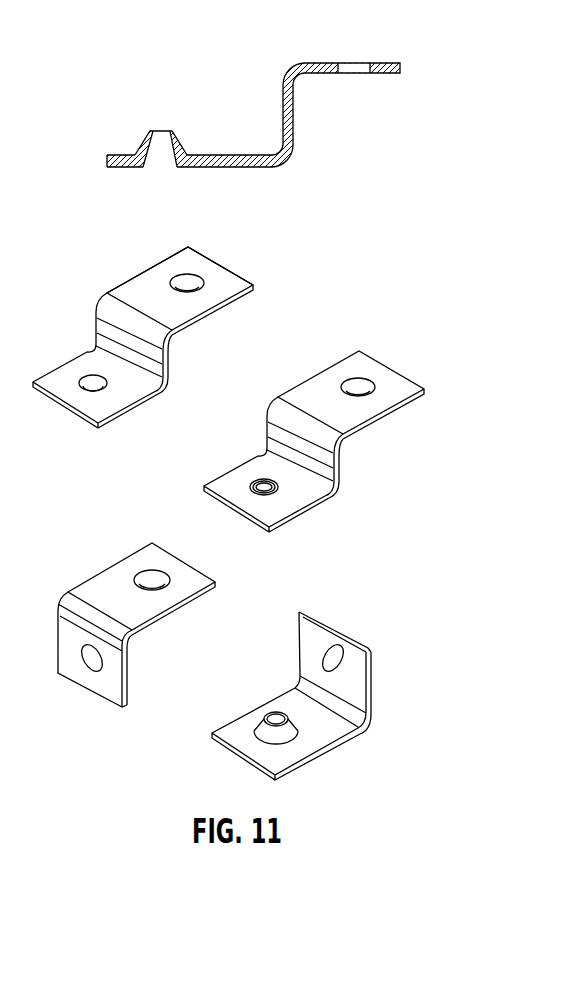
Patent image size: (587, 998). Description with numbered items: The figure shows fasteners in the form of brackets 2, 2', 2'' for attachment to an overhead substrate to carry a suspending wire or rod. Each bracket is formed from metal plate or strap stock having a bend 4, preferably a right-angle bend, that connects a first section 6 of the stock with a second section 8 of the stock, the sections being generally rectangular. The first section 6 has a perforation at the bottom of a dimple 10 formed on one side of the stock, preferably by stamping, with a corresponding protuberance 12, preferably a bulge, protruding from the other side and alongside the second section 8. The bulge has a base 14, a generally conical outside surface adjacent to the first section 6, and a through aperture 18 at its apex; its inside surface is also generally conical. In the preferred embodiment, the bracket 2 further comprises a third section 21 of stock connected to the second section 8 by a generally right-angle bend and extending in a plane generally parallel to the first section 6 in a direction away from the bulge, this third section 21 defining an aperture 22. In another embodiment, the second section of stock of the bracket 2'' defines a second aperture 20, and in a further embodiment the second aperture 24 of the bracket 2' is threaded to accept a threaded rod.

The bracket 2 is at (231, 184).
The bracket 2' is at (326, 428).
The bracket 2'' is at (220, 658).
The bend 4 is at (273, 126).
The first section 6 is at (148, 283).
The second section 8 is at (294, 107).
The dimple 10 is at (188, 285).
The protuberance 12 is at (178, 153).
The base 14 is at (122, 155).
The through aperture 18 is at (158, 124).
The second aperture 20 is at (92, 658).
The third section 21 is at (60, 378).
The aperture 22 is at (97, 387).
The second aperture 24 is at (262, 481).